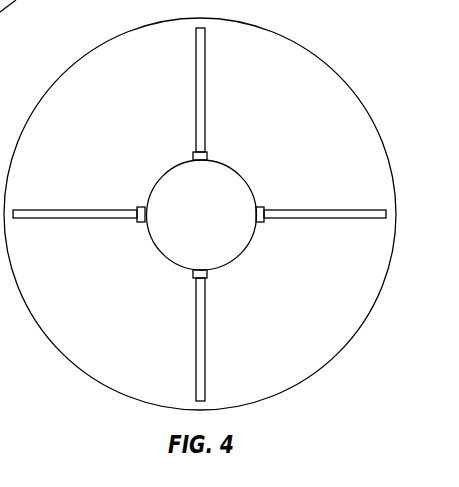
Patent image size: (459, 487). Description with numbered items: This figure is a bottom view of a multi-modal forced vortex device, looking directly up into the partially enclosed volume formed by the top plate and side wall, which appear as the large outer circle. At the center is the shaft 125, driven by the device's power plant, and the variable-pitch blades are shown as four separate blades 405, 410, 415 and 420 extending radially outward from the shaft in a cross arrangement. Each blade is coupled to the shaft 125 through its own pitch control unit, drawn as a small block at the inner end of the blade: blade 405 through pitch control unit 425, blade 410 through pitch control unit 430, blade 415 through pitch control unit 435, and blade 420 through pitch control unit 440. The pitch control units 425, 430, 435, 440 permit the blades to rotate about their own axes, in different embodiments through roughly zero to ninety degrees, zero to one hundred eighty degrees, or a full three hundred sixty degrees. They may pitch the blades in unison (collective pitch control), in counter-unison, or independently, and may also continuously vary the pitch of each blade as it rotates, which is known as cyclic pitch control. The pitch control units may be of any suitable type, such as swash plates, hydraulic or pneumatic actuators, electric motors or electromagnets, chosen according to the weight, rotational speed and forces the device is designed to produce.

The shaft 125 is at (220, 228).
The blade 405 is at (205, 97).
The blade 410 is at (33, 220).
The blade 415 is at (205, 360).
The blade 420 is at (364, 222).
The pitch control unit 425 is at (207, 157).
The pitch control unit 430 is at (141, 207).
The pitch control unit 435 is at (207, 274).
The pitch control unit 440 is at (262, 207).